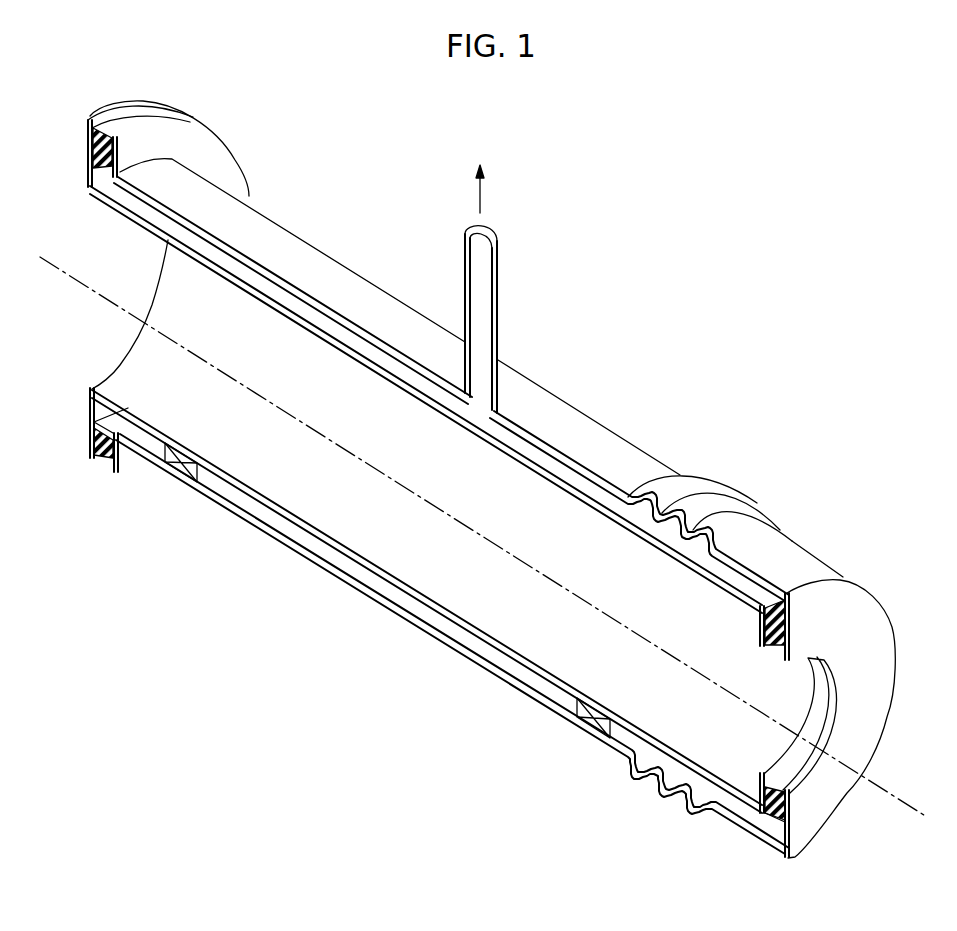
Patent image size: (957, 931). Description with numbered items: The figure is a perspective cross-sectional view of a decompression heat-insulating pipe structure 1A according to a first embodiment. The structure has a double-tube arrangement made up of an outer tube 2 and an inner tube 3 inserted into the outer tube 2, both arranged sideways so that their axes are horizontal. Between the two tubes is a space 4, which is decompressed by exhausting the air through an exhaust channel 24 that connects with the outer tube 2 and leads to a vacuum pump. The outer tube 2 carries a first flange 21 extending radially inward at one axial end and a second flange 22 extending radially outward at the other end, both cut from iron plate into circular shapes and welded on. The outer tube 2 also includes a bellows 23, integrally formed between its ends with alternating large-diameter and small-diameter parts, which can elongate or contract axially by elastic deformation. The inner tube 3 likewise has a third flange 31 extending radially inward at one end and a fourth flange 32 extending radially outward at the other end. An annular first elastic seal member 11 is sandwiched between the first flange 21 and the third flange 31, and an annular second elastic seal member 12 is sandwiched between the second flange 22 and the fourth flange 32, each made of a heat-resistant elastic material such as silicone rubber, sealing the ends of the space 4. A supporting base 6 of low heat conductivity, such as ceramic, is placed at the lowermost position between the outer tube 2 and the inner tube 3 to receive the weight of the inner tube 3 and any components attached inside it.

The decompression heat-insulating pipe structure 1A is at (728, 276).
The outer tube 2 is at (311, 267).
The inner tube 3 is at (367, 348).
The space 4 is at (411, 604).
The supporting base 6 is at (176, 477).
The first elastic seal member 11 is at (781, 820).
The second elastic seal member 12 is at (101, 462).
The first flange 21 is at (868, 673).
The second flange 22 is at (203, 152).
The bellows 23 is at (701, 500).
The exhaust channel 24 is at (478, 310).
The third flange 31 is at (818, 696).
The fourth flange 32 is at (100, 174).